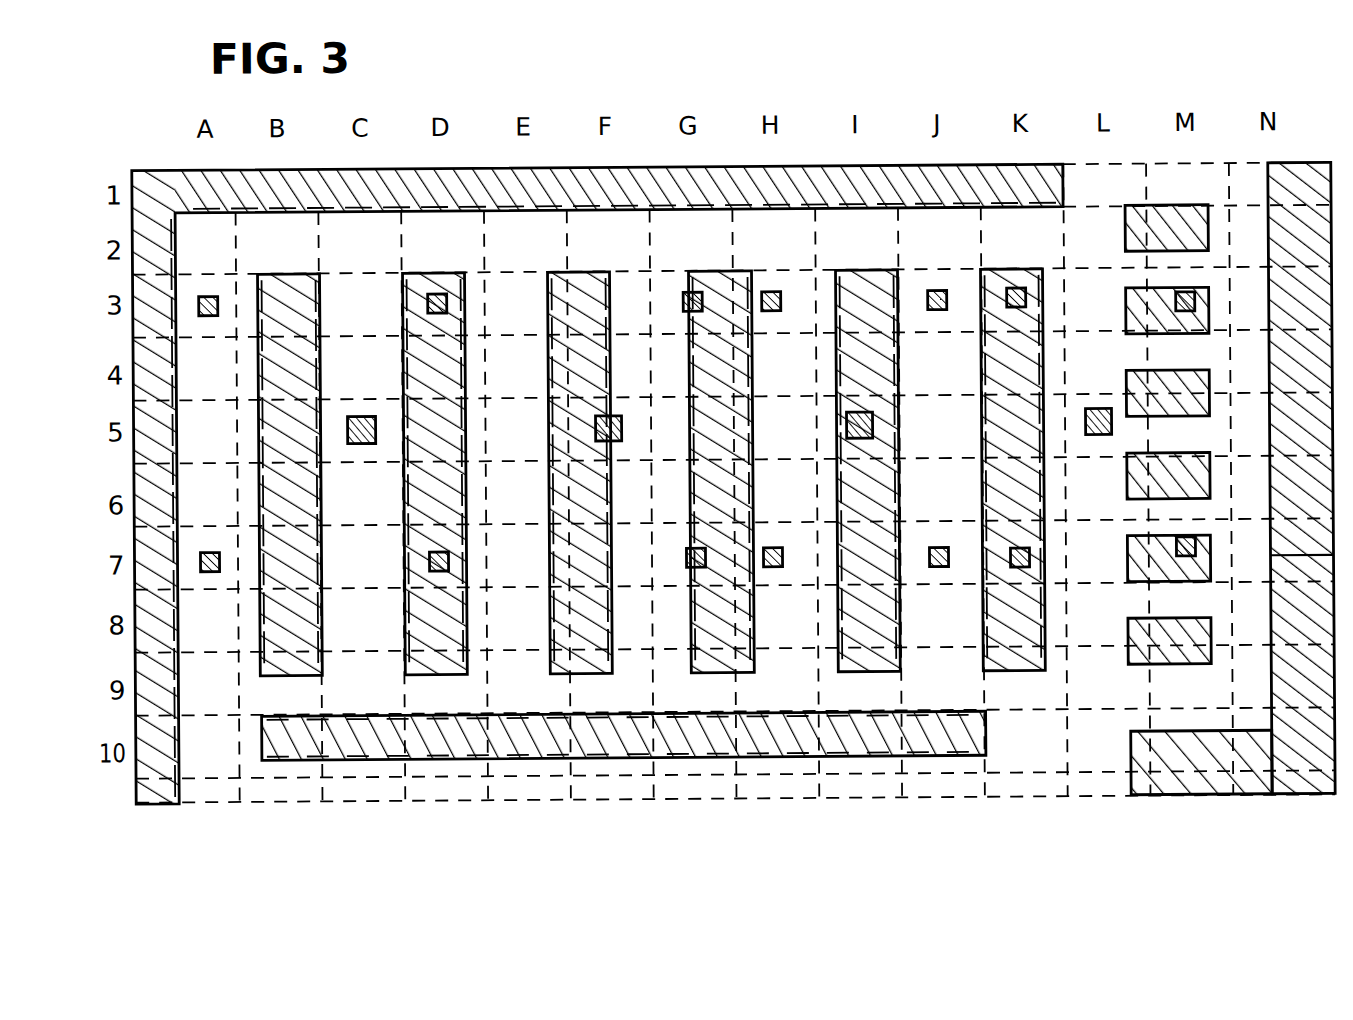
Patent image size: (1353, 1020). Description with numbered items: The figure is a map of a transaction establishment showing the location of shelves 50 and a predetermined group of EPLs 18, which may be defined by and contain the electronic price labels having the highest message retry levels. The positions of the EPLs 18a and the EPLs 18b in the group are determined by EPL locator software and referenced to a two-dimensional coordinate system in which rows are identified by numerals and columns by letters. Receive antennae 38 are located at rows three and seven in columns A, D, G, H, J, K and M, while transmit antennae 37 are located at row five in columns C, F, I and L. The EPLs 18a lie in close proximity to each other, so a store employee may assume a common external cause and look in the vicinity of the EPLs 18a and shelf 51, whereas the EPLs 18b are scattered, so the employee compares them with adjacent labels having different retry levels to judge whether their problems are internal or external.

The EPLs 18 is at (734, 509).
The EPLs 18a is at (503, 209).
The EPLs 18b is at (806, 210).
The transmit antennae 37 is at (607, 415).
The receive antennae 38 is at (209, 292).
The shelves 50 is at (260, 735).
The shelf 51 is at (651, 441).